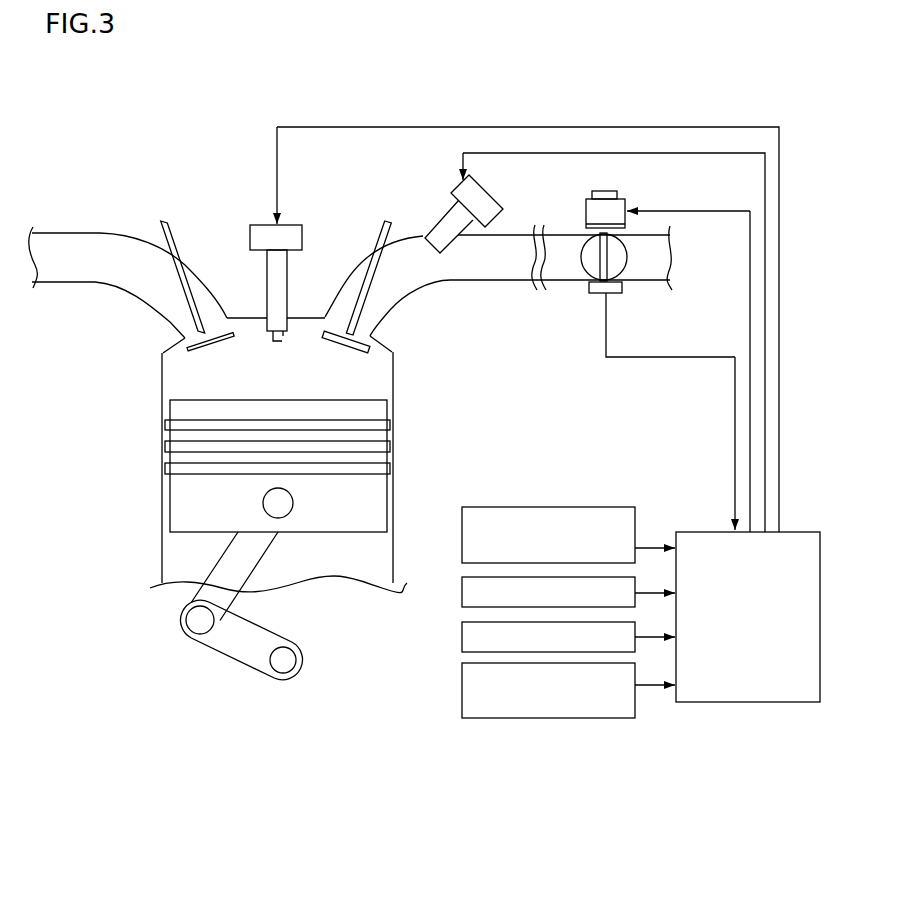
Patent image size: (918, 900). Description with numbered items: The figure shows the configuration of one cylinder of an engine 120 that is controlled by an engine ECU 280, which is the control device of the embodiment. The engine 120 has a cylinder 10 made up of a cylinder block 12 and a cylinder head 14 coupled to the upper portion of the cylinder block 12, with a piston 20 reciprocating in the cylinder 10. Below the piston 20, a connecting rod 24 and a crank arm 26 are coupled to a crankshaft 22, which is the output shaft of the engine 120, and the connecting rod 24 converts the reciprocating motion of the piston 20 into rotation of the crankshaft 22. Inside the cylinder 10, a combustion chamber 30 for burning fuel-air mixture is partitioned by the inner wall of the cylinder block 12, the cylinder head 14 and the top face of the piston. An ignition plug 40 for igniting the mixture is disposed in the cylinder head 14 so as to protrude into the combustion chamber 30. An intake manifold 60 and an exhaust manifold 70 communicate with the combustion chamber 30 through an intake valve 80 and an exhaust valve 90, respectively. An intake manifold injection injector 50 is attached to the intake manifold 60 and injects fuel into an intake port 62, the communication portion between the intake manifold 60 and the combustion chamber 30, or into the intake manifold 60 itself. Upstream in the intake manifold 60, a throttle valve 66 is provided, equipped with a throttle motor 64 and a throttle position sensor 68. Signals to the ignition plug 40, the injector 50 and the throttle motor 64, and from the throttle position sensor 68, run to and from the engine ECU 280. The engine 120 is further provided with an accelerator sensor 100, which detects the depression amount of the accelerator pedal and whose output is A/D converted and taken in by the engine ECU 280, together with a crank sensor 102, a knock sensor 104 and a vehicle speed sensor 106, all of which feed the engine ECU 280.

The cylinder 10 is at (147, 422).
The cylinder block 12 is at (397, 485).
The cylinder head 14 is at (172, 345).
The piston 20 is at (330, 520).
The crankshaft 22 is at (300, 667).
The connecting rod 24 is at (245, 555).
The crank arm 26 is at (230, 664).
The combustion chamber 30 is at (187, 383).
The ignition plug 40 is at (267, 287).
The intake manifold injection injector 50 is at (455, 190).
The intake manifold 60 is at (418, 275).
The intake port 62 is at (362, 331).
The throttle motor 64 is at (590, 205).
The throttle valve 66 is at (590, 262).
The throttle position sensor 68 is at (615, 292).
The exhaust manifold 70 is at (80, 282).
The intake valve 80 is at (328, 345).
The exhaust valve 90 is at (218, 345).
The accelerator sensor 100 is at (575, 507).
The crank sensor 102 is at (462, 595).
The knock sensor 104 is at (462, 632).
The vehicle speed sensor 106 is at (578, 718).
The engine 120 is at (205, 168).
The engine ECU 280 is at (700, 532).